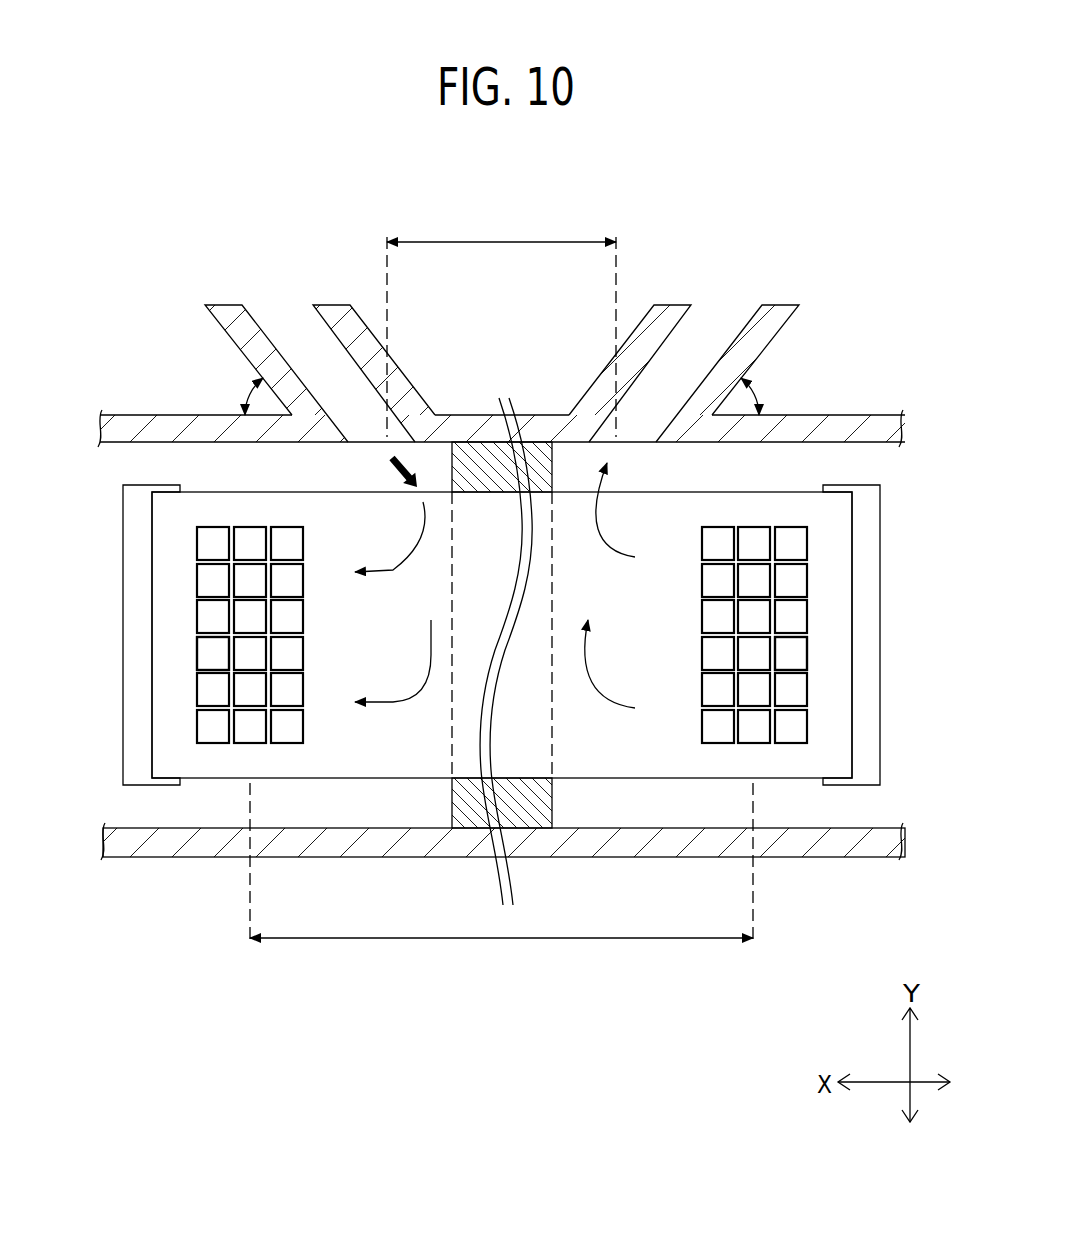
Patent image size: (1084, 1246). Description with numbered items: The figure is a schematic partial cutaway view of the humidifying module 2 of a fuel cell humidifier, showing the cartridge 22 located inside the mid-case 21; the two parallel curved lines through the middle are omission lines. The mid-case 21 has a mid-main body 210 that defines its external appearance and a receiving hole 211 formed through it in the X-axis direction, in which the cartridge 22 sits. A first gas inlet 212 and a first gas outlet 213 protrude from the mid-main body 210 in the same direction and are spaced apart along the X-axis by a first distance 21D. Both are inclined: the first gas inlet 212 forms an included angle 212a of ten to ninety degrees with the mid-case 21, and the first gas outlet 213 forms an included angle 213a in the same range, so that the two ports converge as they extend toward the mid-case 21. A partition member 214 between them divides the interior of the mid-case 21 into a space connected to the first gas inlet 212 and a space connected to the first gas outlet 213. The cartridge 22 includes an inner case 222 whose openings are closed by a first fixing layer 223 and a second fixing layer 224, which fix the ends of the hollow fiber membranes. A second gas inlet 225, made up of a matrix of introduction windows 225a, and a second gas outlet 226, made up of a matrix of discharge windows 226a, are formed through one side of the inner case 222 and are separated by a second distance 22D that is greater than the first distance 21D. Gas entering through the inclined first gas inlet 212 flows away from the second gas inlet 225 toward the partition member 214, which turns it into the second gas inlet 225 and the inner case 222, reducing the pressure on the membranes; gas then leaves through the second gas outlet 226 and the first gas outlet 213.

The humidifying module 2 is at (58, 219).
The mid-case 21 is at (195, 335).
The mid-main body 210 is at (143, 427).
The receiving hole 211 is at (848, 470).
The first gas inlet 212 is at (252, 348).
The included angle 212a is at (230, 394).
The first gas outlet 213 is at (753, 348).
The included angle 213a is at (774, 395).
The partition member 214 is at (474, 457).
The first distance 21D is at (501, 326).
The cartridge 22 is at (183, 927).
The inner case 222 is at (172, 710).
The first fixing layer 223 is at (139, 773).
The second fixing layer 224 is at (865, 773).
The second gas inlet 225 is at (213, 746).
The introduction window 225a is at (214, 650).
The second gas outlet 226 is at (791, 746).
The discharge window 226a is at (789, 650).
The second distance 22D is at (501, 877).